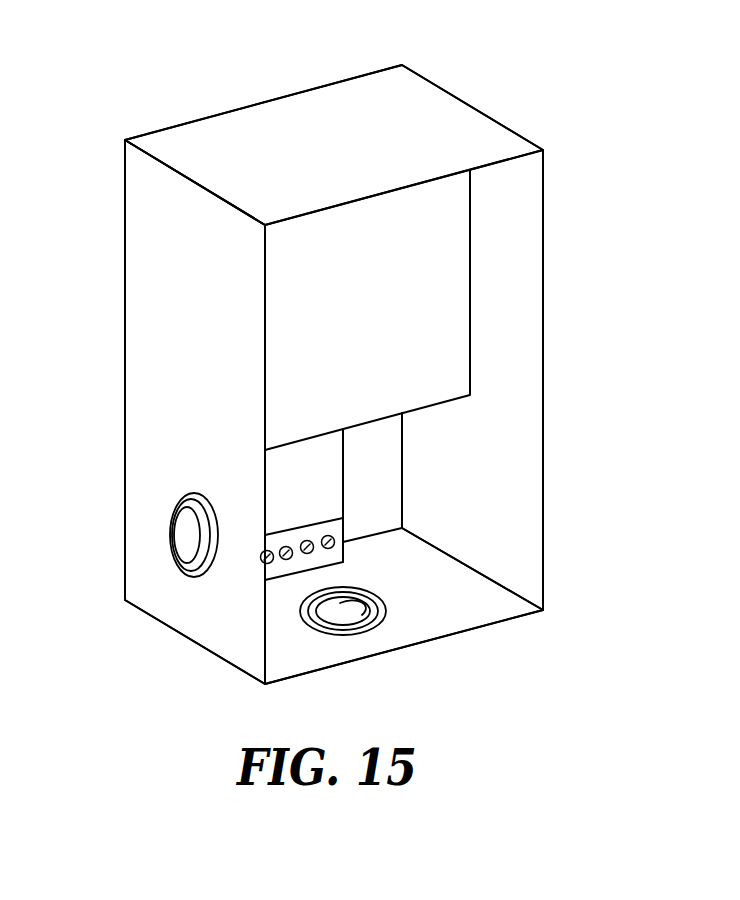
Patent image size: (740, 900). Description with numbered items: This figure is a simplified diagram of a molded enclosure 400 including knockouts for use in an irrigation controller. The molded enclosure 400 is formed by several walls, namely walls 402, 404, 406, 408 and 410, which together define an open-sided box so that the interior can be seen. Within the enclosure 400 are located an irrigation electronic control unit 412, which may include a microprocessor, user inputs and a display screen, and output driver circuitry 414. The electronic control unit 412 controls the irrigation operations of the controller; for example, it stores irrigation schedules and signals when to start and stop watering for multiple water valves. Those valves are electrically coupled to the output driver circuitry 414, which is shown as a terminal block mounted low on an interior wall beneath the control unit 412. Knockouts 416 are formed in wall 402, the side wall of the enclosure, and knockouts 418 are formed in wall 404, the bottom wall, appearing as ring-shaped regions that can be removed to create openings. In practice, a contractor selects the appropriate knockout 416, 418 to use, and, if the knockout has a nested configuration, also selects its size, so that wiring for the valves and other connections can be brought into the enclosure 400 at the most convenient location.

The molded enclosure 400 is at (478, 73).
The wall 402 is at (160, 303).
The wall 404 is at (493, 613).
The wall 406 is at (523, 395).
The wall 408 is at (254, 127).
The wall 410 is at (383, 448).
The irrigation electronic control unit 412 is at (443, 270).
The output driver circuitry 414 is at (305, 542).
The knockouts 416 is at (185, 535).
The knockouts 418 is at (368, 607).